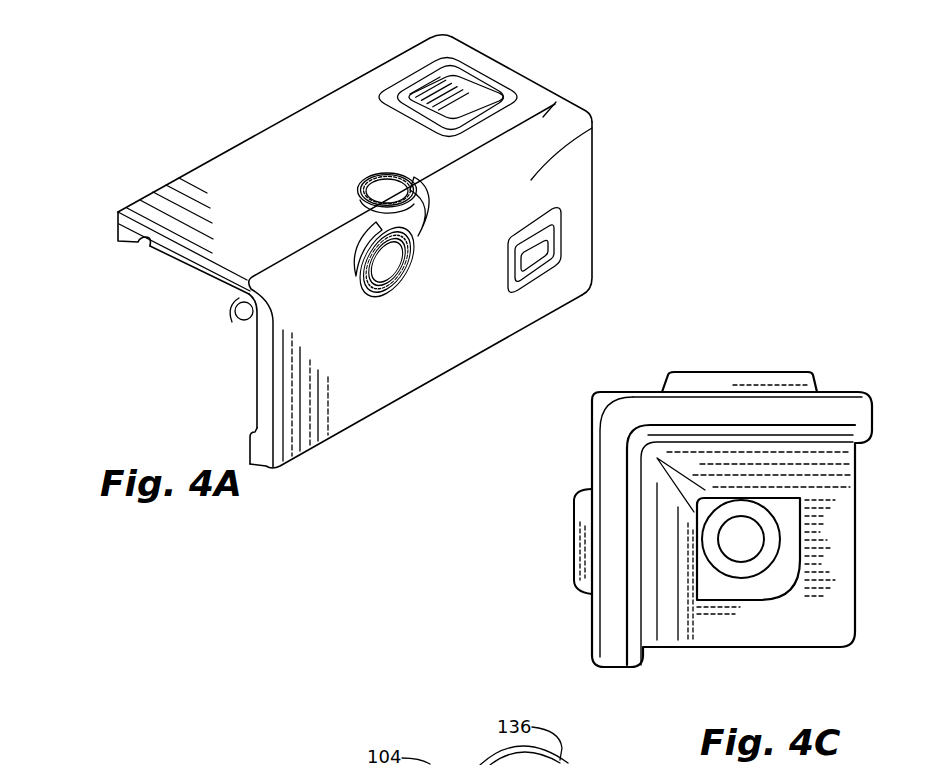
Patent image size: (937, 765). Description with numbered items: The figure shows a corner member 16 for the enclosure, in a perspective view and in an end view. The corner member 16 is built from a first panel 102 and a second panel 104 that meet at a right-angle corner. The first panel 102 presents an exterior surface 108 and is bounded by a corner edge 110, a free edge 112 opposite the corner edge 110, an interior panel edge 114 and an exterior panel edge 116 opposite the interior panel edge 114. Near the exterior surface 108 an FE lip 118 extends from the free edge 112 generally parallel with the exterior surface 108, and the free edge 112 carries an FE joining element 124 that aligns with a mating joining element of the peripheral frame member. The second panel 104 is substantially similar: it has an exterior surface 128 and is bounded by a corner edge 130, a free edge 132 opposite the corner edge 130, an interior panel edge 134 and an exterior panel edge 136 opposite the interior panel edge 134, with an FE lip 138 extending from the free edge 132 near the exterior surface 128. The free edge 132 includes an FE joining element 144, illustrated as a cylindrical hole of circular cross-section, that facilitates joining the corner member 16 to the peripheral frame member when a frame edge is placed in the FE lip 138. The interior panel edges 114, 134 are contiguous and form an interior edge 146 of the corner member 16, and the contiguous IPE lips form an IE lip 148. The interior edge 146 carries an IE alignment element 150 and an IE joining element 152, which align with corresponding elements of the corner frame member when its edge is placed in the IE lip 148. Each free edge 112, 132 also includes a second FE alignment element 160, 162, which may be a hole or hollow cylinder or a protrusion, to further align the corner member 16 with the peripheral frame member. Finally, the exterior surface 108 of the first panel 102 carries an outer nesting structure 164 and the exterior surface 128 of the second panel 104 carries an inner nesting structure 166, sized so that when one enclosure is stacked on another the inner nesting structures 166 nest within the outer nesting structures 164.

In FIG. 4A, the corner member 16 is at (556, 76).
In FIG. 4C, the corner member 16 is at (777, 658).
In FIG. 4A, the first panel 102 is at (272, 78).
In FIG. 4A, the second panel 104 is at (395, 411).
In FIG. 4A, the exterior surface 108 is at (287, 206).
In FIG. 4A, the corner edge 110 is at (548, 120).
In FIG. 4A, the free edge 112 is at (277, 122).
In FIG. 4A, the interior panel edge 114 is at (200, 275).
In FIG. 4A, the exterior panel edge 116 is at (497, 59).
In FIG. 4C, the exterior panel edge 116 is at (838, 390).
In FIG. 4A, the FE lip 118 is at (147, 248).
In FIG. 4A, the FE joining element 124 is at (409, 288).
In FIG. 4A, the exterior surface 128 is at (382, 368).
In FIG. 4A, the corner edge 130 is at (582, 152).
In FIG. 4A, the free edge 132 is at (346, 428).
In FIG. 4A, the interior panel edge 134 is at (257, 385).
In FIG. 4A, the exterior panel edge 136 is at (596, 218).
In FIG. 4C, the exterior panel edge 136 is at (598, 600).
In FIG. 4A, the FE lip 138 is at (253, 435).
In FIG. 4A, the FE joining element 144 is at (364, 171).
In FIG. 4A, the interior edge 146 is at (223, 245).
In FIG. 4A, the IE lip 148 is at (213, 293).
In FIG. 4A, the IE alignment element 150 is at (244, 312).
In FIG. 4C, the IE joining element 152 is at (736, 552).
In FIG. 4C, the second FE alignment element 160 is at (881, 407).
In FIG. 4C, the second FE alignment element 162 is at (630, 673).
In FIG. 4A, the outer nesting structure 164 is at (441, 56).
In FIG. 4C, the outer nesting structure 164 is at (735, 372).
In FIG. 4A, the inner nesting structure 166 is at (547, 278).
In FIG. 4C, the inner nesting structure 166 is at (574, 520).